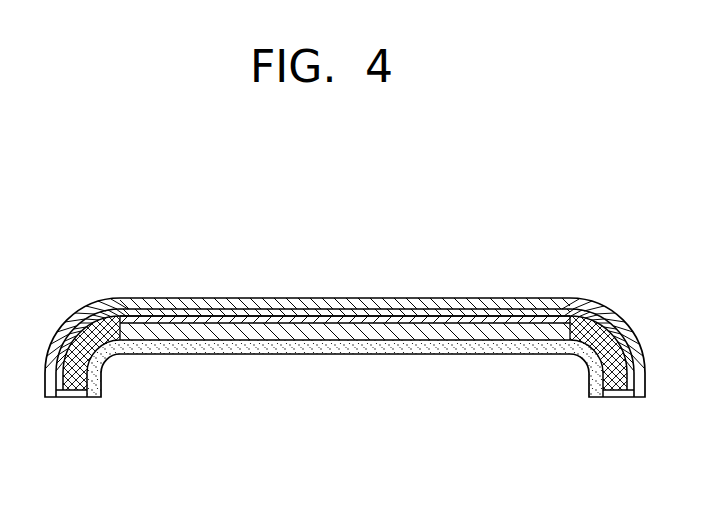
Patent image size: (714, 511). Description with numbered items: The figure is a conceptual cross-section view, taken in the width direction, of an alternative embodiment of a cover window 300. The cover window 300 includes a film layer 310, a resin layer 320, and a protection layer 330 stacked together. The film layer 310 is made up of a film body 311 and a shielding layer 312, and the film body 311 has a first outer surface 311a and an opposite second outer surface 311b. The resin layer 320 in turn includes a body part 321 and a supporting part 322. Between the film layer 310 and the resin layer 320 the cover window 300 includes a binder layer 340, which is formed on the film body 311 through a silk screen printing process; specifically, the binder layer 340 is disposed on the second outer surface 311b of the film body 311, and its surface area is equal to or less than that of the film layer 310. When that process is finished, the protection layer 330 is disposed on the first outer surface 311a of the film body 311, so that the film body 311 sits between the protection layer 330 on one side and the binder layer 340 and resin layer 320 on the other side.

The cover window 300 is at (110, 200).
The film layer 310 is at (505, 237).
The film body 311 is at (514, 313).
The first outer surface 311a is at (328, 320).
The second outer surface 311b is at (328, 322).
The shielding layer 312 is at (597, 318).
The resin layer 320 is at (273, 449).
The body part 321 is at (255, 342).
The supporting part 322 is at (70, 398).
The protection layer 330 is at (193, 305).
The binder layer 340 is at (412, 345).